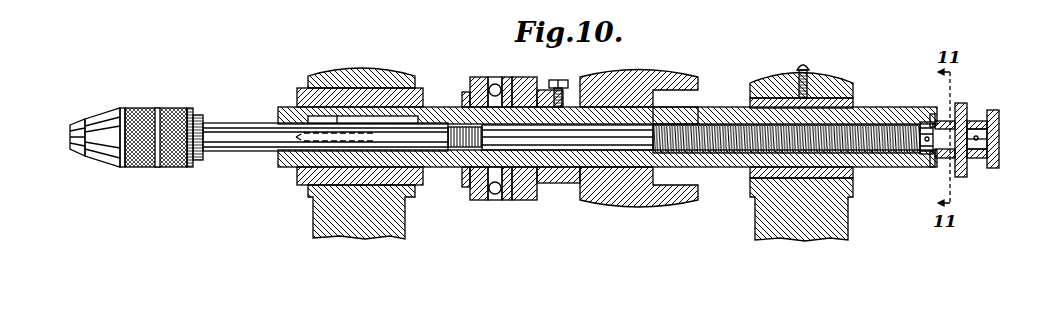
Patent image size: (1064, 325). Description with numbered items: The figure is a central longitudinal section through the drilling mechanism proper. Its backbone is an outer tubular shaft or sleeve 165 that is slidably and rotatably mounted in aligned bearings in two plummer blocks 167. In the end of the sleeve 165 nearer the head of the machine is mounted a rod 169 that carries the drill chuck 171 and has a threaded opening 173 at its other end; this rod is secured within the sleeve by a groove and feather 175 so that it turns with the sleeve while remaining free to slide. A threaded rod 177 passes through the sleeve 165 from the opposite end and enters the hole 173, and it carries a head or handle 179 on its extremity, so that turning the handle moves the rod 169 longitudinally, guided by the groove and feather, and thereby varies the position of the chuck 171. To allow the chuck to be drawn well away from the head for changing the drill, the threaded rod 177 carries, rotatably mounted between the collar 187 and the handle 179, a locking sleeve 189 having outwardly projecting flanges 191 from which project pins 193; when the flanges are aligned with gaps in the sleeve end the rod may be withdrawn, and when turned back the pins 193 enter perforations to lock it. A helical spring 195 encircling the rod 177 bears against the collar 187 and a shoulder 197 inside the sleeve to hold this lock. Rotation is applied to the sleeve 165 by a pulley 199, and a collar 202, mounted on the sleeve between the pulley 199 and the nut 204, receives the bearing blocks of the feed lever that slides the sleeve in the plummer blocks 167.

The drill chuck 171 is at (143, 157).
The rod 169 is at (242, 140).
The groove and feather 175 is at (322, 118).
The threaded opening 173 is at (442, 135).
The collar 202 is at (520, 88).
The nut 204 is at (480, 200).
The plummer blocks 167 is at (367, 222).
The threaded rod 177 is at (563, 138).
The pulley 199 is at (607, 200).
The shoulder 197 is at (655, 113).
The outer tubular shaft or sleeve 165 is at (710, 113).
The helical spring 195 is at (737, 147).
The collar 187 is at (925, 125).
The outwardly projecting flanges 191 is at (937, 160).
The pins 193 is at (942, 117).
The sleeve 189 is at (967, 173).
The head or handle 179 is at (1000, 118).